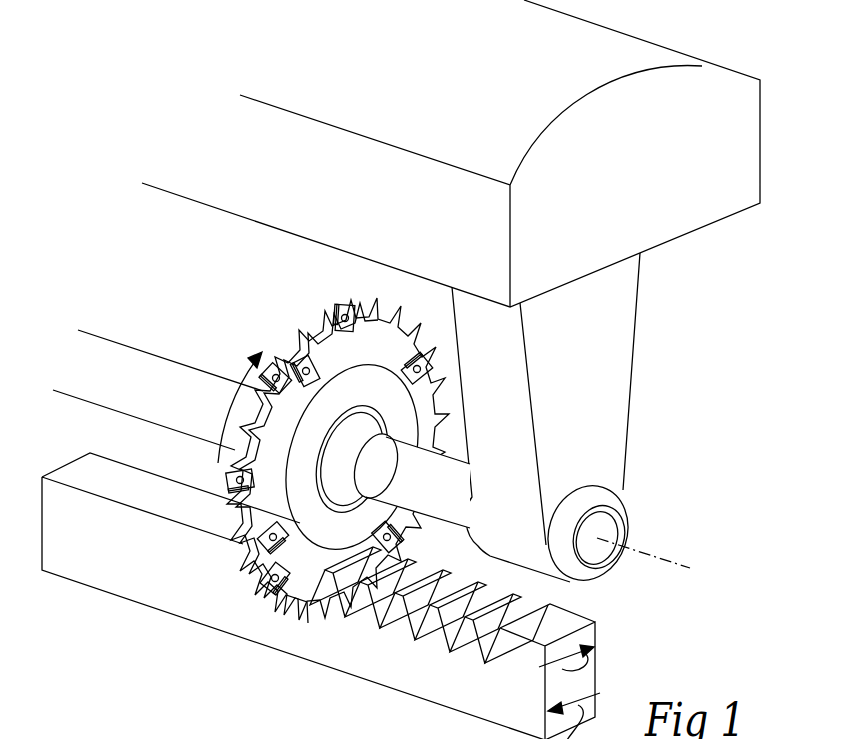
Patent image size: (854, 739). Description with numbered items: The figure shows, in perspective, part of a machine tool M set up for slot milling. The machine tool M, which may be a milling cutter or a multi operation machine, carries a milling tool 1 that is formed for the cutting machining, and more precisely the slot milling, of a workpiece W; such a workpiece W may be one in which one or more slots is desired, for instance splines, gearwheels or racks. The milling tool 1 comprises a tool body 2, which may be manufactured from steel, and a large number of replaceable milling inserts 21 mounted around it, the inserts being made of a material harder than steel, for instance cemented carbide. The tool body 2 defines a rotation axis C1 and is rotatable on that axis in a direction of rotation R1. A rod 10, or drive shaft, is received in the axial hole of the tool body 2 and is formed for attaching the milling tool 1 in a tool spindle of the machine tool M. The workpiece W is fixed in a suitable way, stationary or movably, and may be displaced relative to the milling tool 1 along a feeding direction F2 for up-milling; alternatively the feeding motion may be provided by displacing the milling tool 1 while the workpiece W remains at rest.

The milling tool 1 is at (318, 311).
The tool body 2 is at (285, 583).
The rod 10 is at (134, 362).
The milling insert 21 is at (233, 738).
The machine tool M is at (689, 218).
The workpiece W is at (554, 618).
The rotation axis C1 is at (660, 560).
The direction of rotation R1 is at (228, 385).
The feeding direction F2 is at (594, 662).